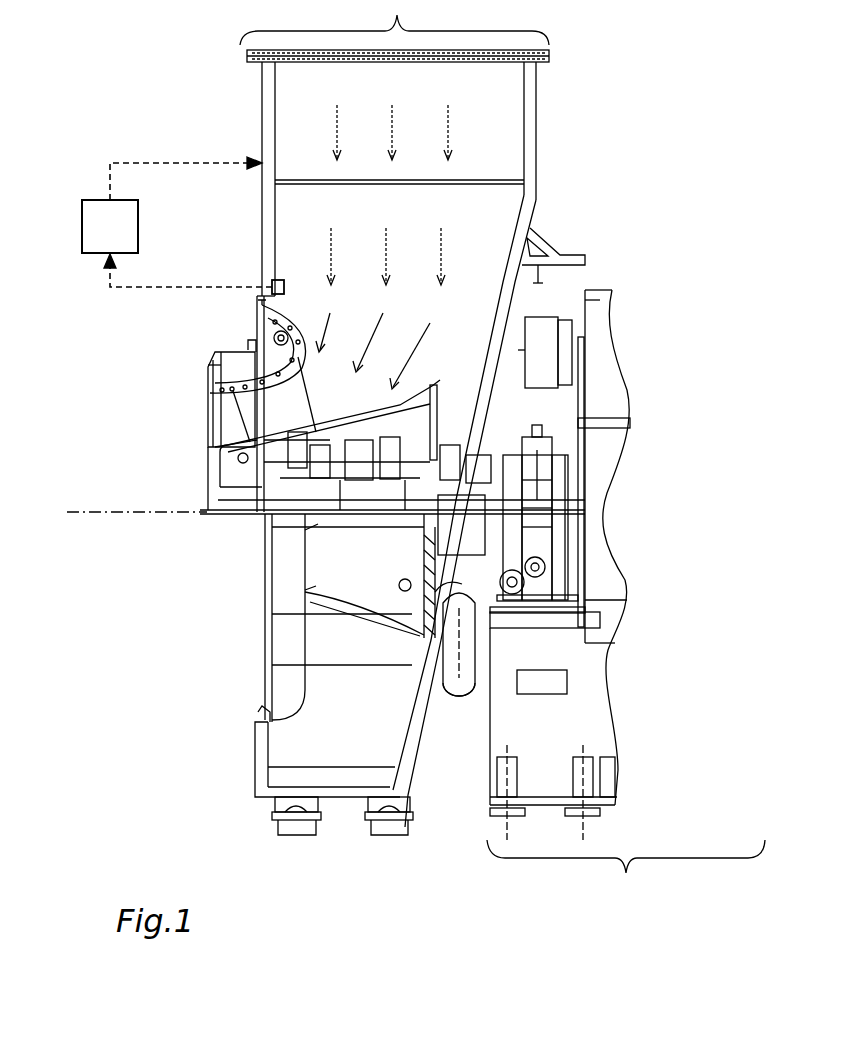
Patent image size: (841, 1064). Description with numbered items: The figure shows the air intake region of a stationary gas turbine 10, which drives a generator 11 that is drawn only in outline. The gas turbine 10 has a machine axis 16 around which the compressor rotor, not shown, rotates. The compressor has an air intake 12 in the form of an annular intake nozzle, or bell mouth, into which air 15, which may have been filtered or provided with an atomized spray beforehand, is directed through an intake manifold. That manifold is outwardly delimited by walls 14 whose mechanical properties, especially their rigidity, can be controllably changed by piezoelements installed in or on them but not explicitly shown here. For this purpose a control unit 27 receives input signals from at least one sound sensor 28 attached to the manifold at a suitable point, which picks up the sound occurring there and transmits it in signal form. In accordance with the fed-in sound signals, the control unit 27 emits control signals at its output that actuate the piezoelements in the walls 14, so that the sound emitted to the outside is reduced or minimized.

The gas turbine 10 is at (183, 618).
The generator 11 is at (626, 602).
The air intake 12 is at (222, 342).
The walls 14 is at (262, 150).
The air 15 is at (335, 125).
The machine axis 16 is at (105, 518).
The control unit 27 is at (95, 228).
The sound sensor 28 is at (272, 283).